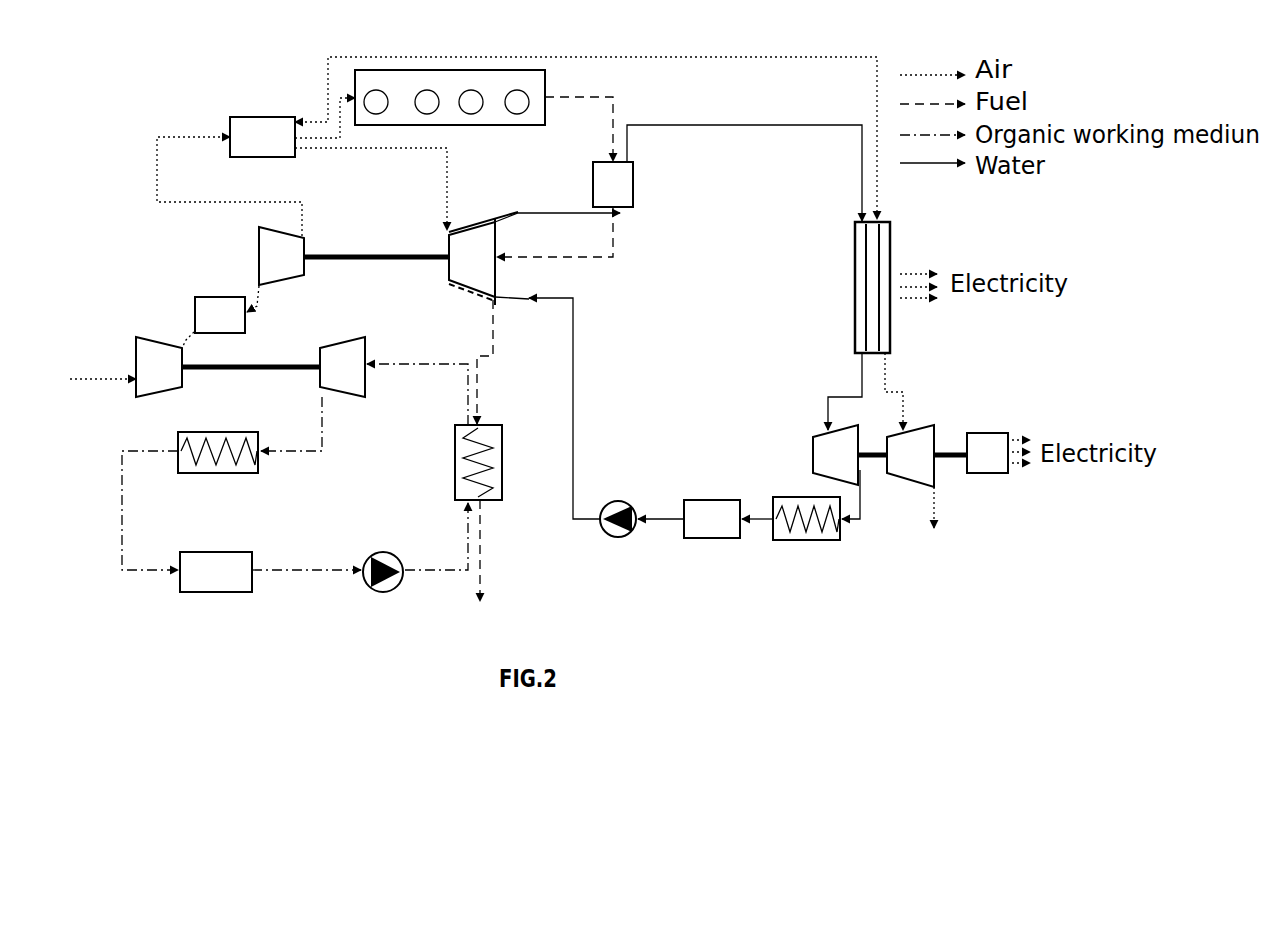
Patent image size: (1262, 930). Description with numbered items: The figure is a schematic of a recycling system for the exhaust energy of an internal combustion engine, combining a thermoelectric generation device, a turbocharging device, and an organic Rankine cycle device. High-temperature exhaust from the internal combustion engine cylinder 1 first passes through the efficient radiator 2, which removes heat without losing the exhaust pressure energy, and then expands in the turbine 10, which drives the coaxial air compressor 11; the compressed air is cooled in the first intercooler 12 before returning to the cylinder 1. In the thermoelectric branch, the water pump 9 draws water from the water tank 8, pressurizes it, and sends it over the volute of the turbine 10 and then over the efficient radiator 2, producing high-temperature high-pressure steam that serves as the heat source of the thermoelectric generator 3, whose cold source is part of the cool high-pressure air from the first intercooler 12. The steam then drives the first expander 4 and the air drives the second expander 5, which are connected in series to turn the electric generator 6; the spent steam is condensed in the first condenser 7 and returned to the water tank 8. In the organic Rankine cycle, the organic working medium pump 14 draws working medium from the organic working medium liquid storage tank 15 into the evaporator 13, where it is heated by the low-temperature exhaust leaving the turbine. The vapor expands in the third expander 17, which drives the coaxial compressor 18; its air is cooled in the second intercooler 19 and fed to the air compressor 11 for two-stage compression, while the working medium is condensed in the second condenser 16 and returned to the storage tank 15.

The internal combustion engine cylinder 1 is at (450, 97).
The efficient radiator 2 is at (613, 184).
The thermoelectric generator 3 is at (851, 287).
The first expander 4 is at (835, 455).
The second expander 5 is at (910, 456).
The electric generator 6 is at (987, 453).
The first condenser 7 is at (806, 541).
The water tank 8 is at (712, 519).
The water pump 9 is at (618, 538).
The turbine 10 is at (483, 258).
The air compressor 11 is at (281, 256).
The first intercooler 12 is at (262, 137).
The evaporator 13 is at (497, 462).
The organic working medium pump 14 is at (388, 591).
The organic working medium liquid storage tank 15 is at (216, 572).
The second condenser 16 is at (218, 468).
The third expander 17 is at (342, 367).
The compressor 18 is at (159, 367).
The second intercooler 19 is at (220, 315).